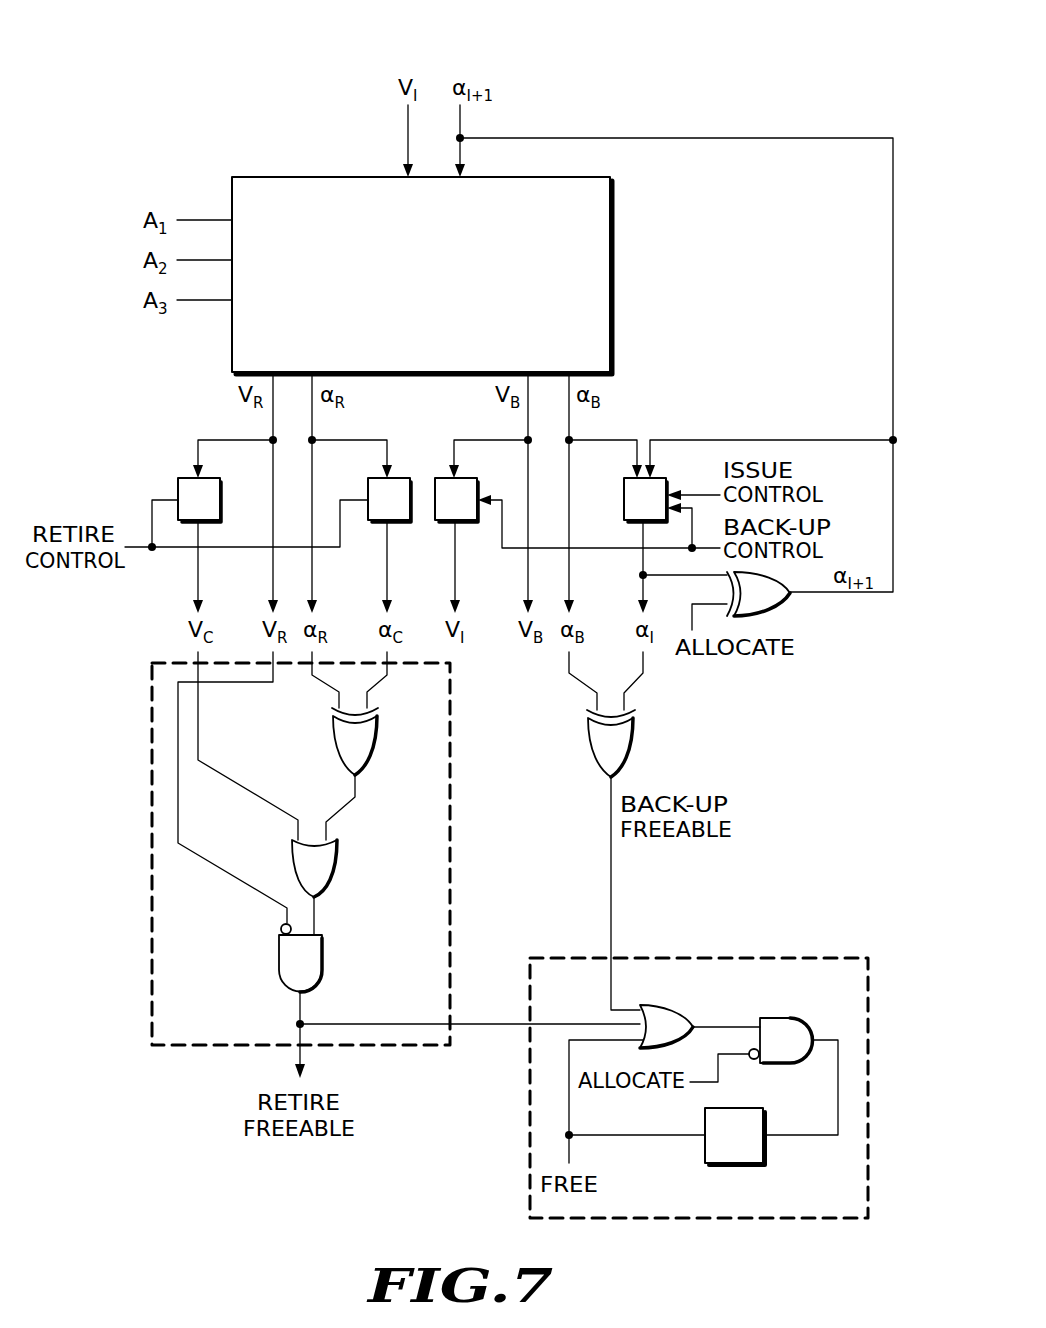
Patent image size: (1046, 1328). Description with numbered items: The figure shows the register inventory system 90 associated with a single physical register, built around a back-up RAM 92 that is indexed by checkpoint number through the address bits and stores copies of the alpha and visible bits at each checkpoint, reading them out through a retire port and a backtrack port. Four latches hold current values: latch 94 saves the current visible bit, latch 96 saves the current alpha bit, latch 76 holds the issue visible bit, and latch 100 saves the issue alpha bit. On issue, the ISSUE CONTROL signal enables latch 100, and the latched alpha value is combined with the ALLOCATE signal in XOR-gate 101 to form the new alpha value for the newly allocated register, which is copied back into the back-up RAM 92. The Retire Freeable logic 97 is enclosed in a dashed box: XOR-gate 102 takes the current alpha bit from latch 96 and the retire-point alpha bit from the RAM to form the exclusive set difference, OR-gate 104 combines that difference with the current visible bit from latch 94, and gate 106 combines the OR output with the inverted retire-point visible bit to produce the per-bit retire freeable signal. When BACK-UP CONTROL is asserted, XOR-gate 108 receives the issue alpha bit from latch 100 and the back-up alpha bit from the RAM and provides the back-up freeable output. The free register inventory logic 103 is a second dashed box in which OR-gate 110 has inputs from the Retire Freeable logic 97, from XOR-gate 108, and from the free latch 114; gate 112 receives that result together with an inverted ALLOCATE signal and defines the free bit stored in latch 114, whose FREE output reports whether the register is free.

The register inventory system 90 is at (661, 64).
The back-up RAM 92 is at (613, 244).
The latch 94 is at (190, 477).
The latch 96 is at (378, 477).
The latch 76 is at (463, 477).
The latch 100 is at (623, 492).
The XOR-gate 101 is at (789, 606).
The Retire Freeable logic 97 is at (151, 752).
The XOR-gate 102 is at (378, 742).
The OR-gate 104 is at (338, 863).
The gate 106 is at (323, 958).
The XOR-gate 108 is at (634, 742).
The free register inventory logic 103 is at (767, 958).
The OR-gate 110 is at (661, 1005).
The gate 112 is at (776, 1064).
The latch 114 is at (765, 1160).